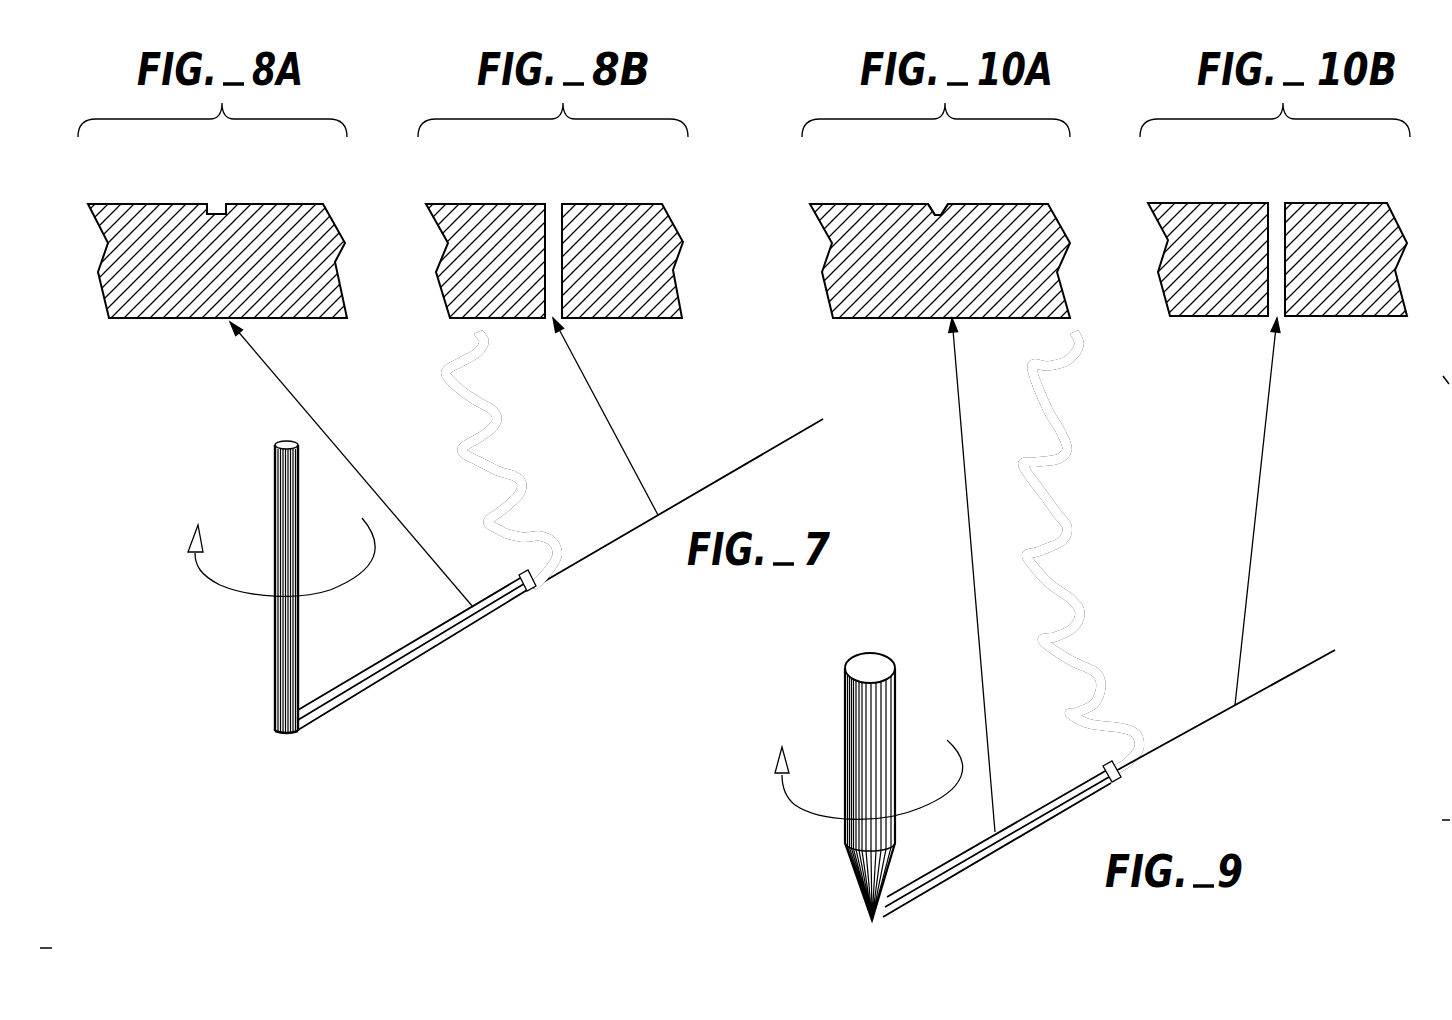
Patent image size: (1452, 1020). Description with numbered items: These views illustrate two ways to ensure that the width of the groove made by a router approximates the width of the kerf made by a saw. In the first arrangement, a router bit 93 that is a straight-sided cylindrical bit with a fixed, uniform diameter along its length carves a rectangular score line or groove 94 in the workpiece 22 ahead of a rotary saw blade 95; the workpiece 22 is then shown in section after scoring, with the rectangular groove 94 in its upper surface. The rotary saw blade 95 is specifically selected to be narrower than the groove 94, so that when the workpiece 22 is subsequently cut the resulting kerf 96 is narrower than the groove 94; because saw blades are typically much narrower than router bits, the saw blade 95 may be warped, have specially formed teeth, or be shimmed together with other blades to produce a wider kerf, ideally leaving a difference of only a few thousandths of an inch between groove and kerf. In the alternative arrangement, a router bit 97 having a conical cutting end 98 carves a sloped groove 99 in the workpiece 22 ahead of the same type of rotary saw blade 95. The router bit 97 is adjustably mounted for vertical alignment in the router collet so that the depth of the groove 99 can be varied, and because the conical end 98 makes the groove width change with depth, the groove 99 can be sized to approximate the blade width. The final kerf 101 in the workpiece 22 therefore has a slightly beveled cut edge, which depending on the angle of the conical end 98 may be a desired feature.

In FIG. 8A, the workpiece 22 is at (265, 203).
In FIG. 8B, the workpiece 22 is at (517, 203).
In FIG. 10A, the workpiece 22 is at (897, 203).
In FIG. 10B, the workpiece 22 is at (1335, 203).
In FIG. 7, the workpiece 22 is at (660, 622).
In FIG. 7, the router bit 93 is at (275, 663).
In FIG. 8A, the groove 94 is at (215, 205).
In FIG. 7, the groove 94 is at (417, 650).
In FIG. 7, the rotary saw blade 95 is at (450, 438).
In FIG. 9, the rotary saw blade 95 is at (1087, 695).
In FIG. 8B, the kerf 96 is at (553, 235).
In FIG. 9, the router bit 97 is at (845, 720).
In FIG. 9, the conical end 98 is at (850, 872).
In FIG. 10A, the sloped groove 99 is at (940, 203).
In FIG. 9, the sloped groove 99 is at (952, 875).
In FIG. 10B, the kerf 101 is at (1273, 233).